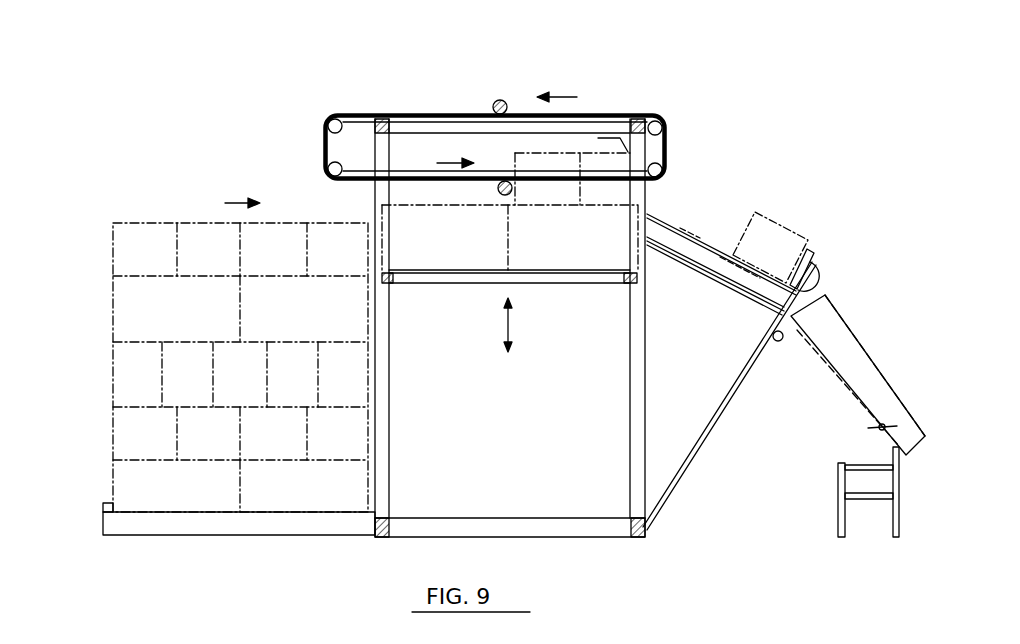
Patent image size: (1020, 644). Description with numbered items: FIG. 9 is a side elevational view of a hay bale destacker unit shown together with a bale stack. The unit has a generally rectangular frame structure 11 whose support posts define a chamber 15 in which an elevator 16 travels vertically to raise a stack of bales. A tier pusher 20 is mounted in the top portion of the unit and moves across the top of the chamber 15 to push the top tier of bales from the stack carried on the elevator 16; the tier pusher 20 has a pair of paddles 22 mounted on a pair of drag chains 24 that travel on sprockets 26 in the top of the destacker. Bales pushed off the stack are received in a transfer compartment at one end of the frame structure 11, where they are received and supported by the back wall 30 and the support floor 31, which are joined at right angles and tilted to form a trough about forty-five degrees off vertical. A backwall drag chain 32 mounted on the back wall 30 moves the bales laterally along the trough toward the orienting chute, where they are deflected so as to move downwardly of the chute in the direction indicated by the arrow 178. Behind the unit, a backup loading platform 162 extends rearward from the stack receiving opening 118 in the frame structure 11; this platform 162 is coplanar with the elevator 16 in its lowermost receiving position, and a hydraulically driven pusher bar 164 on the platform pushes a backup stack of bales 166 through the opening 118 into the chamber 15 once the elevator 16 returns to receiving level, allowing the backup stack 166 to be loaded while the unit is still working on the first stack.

The frame structure 11 is at (410, 537).
The stack receiving opening 118 is at (389, 380).
The chamber 15 is at (521, 391).
The elevator 16 is at (585, 283).
The tier pusher 20 is at (357, 108).
The paddles 22 is at (496, 101).
The drag chains 24 is at (667, 160).
The sprockets 26 is at (333, 169).
The back wall 30 is at (652, 216).
The support floor 31 is at (803, 250).
The backwall drag chain 32 is at (699, 230).
The arrow 178 is at (884, 336).
The backup loading platform 162 is at (282, 520).
The pusher bar 164 is at (103, 507).
The backup stack of bales 166 is at (312, 320).